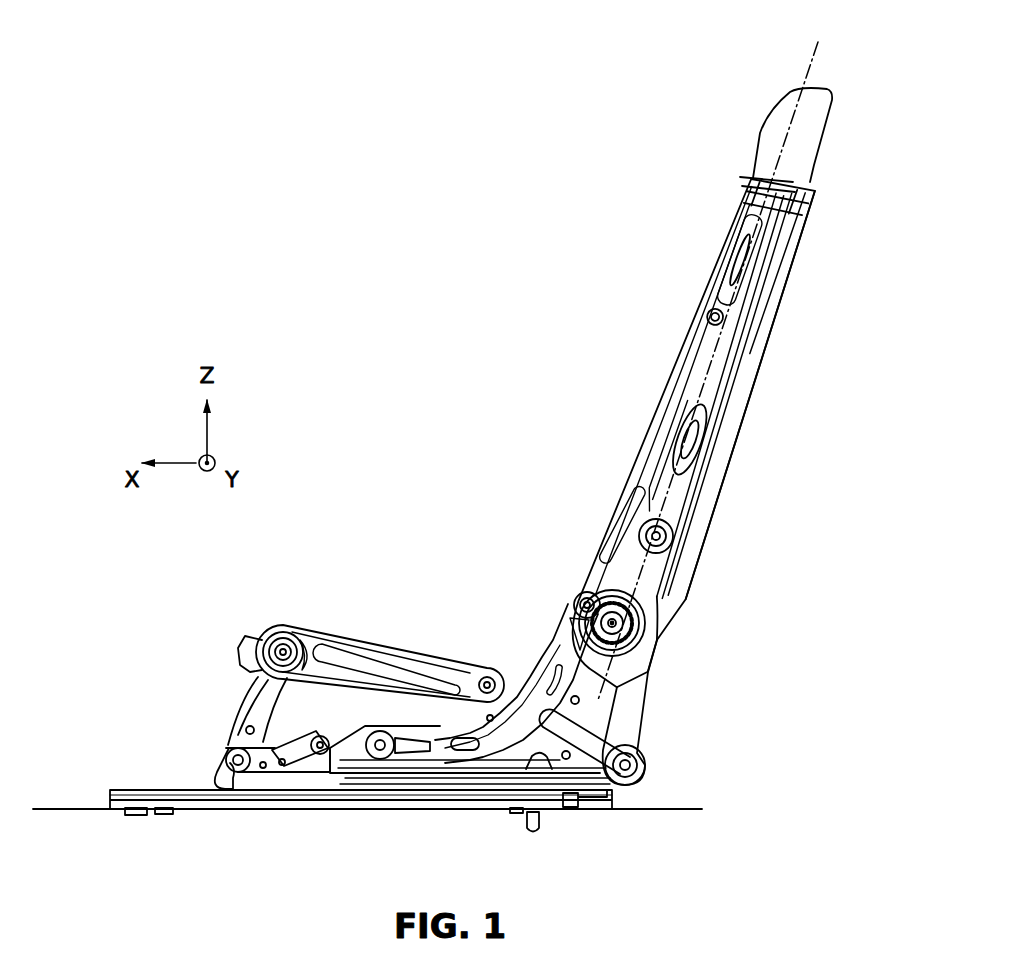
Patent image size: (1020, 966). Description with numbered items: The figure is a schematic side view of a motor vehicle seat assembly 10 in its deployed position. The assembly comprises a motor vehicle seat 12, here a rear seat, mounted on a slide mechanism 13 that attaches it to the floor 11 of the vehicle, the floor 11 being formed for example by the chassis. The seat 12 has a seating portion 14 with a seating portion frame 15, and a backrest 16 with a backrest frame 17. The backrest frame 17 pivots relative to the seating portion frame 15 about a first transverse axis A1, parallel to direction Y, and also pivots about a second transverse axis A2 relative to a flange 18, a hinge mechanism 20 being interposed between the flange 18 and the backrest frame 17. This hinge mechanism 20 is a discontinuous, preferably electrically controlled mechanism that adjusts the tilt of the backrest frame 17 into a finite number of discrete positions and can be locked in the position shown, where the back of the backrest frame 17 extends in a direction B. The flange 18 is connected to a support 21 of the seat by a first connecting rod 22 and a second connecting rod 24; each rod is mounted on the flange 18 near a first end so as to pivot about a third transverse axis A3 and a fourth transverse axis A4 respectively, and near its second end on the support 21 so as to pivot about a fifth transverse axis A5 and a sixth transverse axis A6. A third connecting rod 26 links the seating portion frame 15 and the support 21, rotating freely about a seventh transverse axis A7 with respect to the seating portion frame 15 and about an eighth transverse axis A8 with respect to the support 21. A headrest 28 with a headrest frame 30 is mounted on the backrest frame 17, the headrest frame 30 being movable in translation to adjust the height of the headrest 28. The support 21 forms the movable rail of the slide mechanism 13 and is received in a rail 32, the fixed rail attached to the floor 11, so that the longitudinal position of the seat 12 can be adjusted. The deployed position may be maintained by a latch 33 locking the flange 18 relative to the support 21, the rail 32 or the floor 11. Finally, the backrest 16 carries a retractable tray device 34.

The motor vehicle seat assembly 10 is at (380, 226).
The floor 11 is at (52, 808).
The motor vehicle seat 12 is at (196, 611).
The slide mechanism 13 is at (106, 786).
The seating portion 14 is at (401, 616).
The seating portion frame 15 is at (350, 663).
The backrest 16 is at (613, 349).
The backrest frame 17 is at (688, 369).
The flange 18 is at (536, 656).
The hinge mechanism 20 is at (636, 623).
The support 21 is at (218, 776).
The first connecting rod 22 is at (442, 747).
The second connecting rod 24 is at (608, 772).
The third connecting rod 26 is at (245, 701).
The headrest 28 is at (841, 89).
The headrest frame 30 is at (800, 135).
The rail 32 is at (562, 806).
The latch 33 is at (530, 770).
The retractable tray device 34 is at (749, 392).
The first transverse axis A1 is at (661, 538).
The second transverse axis A2 is at (650, 648).
The third transverse axis A3 is at (583, 600).
The fourth transverse axis A4 is at (486, 684).
The fifth transverse axis A5 is at (380, 752).
The sixth transverse axis A6 is at (628, 759).
The seventh transverse axis A7 is at (281, 649).
The eighth transverse axis A8 is at (223, 751).
The direction B is at (808, 64).